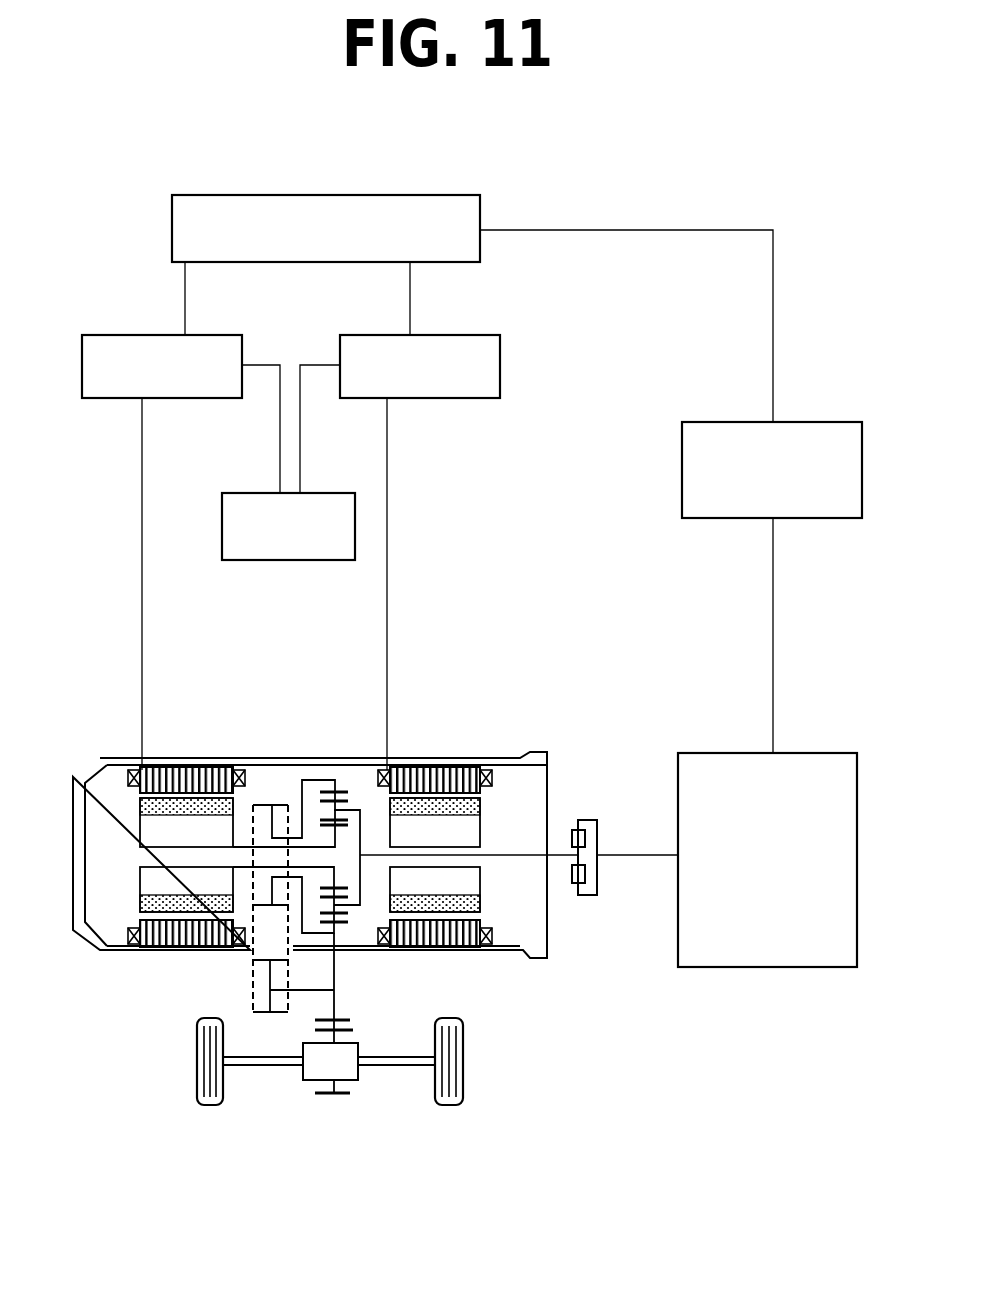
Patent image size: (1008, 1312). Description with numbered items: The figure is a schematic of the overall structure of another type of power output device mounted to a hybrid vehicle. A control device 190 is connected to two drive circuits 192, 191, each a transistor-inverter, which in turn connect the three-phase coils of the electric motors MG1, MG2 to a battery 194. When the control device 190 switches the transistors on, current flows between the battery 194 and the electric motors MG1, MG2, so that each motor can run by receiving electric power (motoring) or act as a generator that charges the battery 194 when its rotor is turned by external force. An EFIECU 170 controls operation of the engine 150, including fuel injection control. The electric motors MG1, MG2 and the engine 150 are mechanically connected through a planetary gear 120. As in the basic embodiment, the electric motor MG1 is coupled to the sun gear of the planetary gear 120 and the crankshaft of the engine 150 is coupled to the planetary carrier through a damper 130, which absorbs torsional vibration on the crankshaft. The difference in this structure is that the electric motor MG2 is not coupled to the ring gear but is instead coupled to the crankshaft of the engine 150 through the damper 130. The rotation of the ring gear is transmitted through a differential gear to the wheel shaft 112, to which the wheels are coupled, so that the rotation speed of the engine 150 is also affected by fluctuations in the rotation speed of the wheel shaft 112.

The control device 190 is at (460, 195).
The drive circuit 192 is at (207, 335).
The drive circuit 191 is at (500, 376).
The battery 194 is at (335, 493).
The EFIECU 170 is at (835, 422).
The engine 150 is at (712, 753).
The damper 130 is at (586, 897).
The planetary gear 120 is at (322, 752).
The wheel shaft 112 is at (268, 1068).
The electric motor MG1 is at (205, 752).
The electric motor MG2 is at (487, 752).